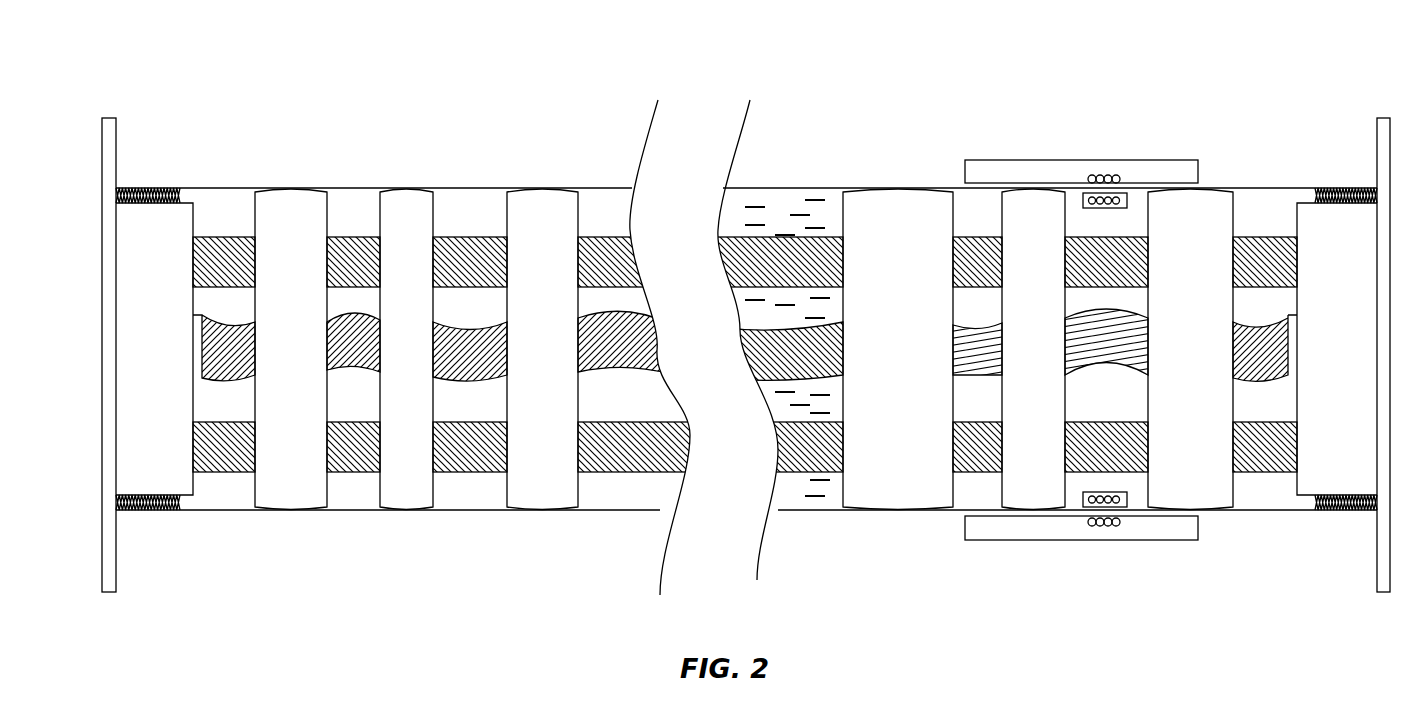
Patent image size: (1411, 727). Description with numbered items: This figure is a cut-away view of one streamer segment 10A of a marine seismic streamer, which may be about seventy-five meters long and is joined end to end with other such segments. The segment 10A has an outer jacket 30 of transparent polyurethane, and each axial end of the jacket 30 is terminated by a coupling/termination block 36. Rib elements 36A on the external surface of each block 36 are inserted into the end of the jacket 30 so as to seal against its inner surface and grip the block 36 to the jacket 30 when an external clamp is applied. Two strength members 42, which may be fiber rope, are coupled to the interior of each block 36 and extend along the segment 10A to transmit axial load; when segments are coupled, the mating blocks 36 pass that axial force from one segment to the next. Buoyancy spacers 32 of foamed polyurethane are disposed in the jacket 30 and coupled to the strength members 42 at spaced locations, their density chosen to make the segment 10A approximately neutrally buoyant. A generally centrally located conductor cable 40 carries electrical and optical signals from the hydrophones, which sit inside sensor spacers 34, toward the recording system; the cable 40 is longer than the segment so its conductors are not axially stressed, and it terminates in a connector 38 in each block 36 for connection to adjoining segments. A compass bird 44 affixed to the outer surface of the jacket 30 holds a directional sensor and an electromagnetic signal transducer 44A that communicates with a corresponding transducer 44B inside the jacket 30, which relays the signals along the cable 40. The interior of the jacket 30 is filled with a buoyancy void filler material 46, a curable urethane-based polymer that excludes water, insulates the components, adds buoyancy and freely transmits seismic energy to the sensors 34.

The streamer segment 10A is at (578, 86).
The jacket 30 is at (479, 184).
The buoyancy spacer 32 is at (284, 196).
The sensor spacer 34 is at (540, 196).
The coupling/termination block 36 is at (117, 464).
The rib element 36A is at (152, 190).
The connector 38 is at (198, 318).
The conductor cable 40 is at (244, 381).
The strength member 42 is at (333, 238).
The compass bird 44 is at (1010, 160).
The electromagnetic signal transducer 44A is at (1102, 174).
The transducer 44B is at (1128, 201).
The buoyancy void filler material 46 is at (785, 487).